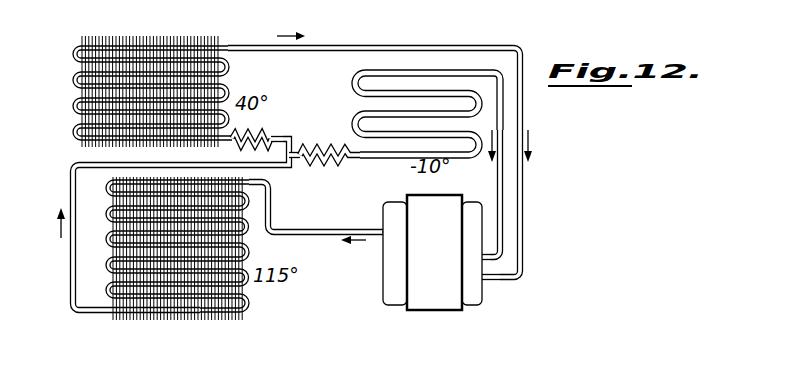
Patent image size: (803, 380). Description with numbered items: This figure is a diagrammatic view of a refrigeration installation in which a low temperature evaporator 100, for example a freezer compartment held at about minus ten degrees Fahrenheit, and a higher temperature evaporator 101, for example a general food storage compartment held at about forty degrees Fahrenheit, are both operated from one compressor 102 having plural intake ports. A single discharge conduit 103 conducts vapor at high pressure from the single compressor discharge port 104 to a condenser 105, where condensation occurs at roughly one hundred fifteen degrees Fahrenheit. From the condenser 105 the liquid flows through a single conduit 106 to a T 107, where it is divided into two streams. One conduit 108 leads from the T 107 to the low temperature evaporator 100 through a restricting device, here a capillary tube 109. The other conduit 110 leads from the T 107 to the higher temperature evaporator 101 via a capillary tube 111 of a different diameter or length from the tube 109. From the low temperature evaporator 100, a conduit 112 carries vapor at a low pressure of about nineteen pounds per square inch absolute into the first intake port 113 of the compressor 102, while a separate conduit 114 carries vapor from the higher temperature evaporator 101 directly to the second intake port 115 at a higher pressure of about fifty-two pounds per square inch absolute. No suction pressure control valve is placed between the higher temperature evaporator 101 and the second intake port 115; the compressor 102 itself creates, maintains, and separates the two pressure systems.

The low temperature evaporator 100 is at (457, 82).
The higher temperature evaporator 101 is at (72, 82).
The compressor 102 is at (452, 265).
The discharge conduit 103 is at (381, 236).
The compressor discharge port 104 is at (394, 229).
The condenser 105 is at (253, 303).
The conduit 106 is at (70, 266).
The T 107 is at (312, 132).
The conduit 108 is at (376, 158).
The capillary tube 109 is at (316, 163).
The conduit 110 is at (287, 135).
The capillary tube 111 is at (272, 132).
The conduit 112 is at (505, 107).
The first intake port 113 is at (472, 252).
The conduit 114 is at (520, 192).
The second intake port 115 is at (480, 280).